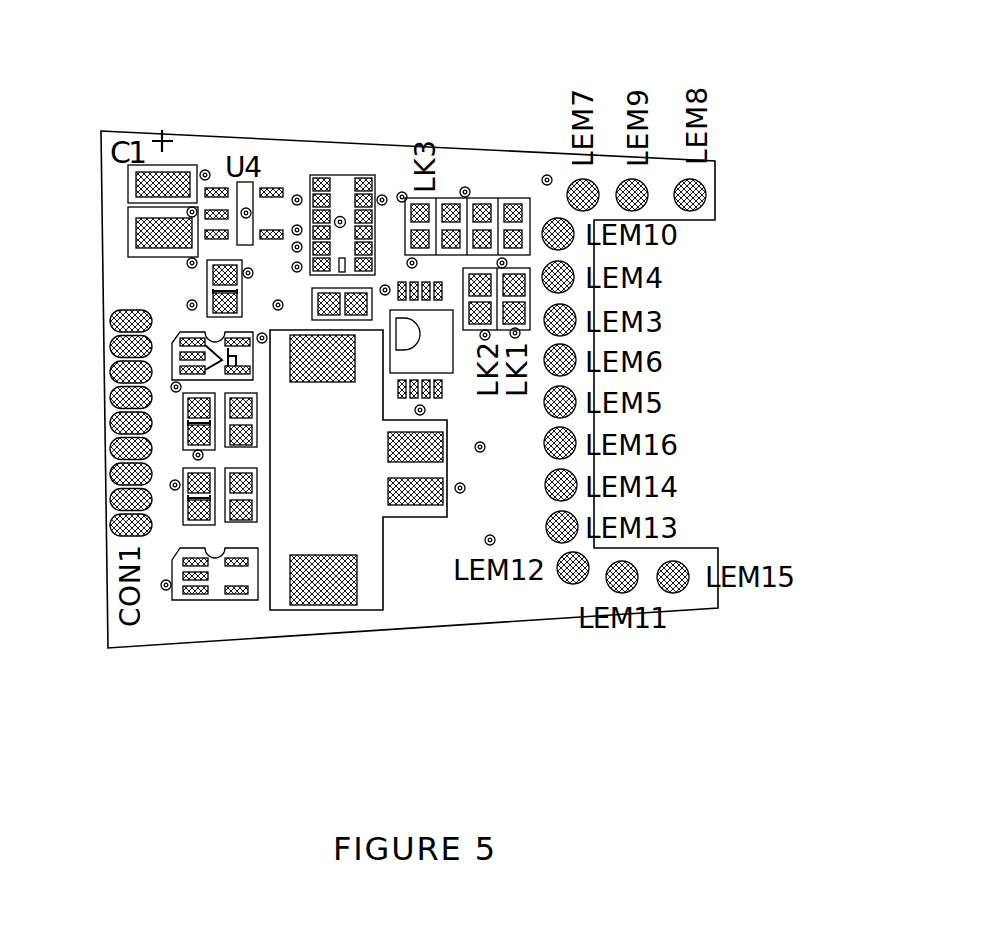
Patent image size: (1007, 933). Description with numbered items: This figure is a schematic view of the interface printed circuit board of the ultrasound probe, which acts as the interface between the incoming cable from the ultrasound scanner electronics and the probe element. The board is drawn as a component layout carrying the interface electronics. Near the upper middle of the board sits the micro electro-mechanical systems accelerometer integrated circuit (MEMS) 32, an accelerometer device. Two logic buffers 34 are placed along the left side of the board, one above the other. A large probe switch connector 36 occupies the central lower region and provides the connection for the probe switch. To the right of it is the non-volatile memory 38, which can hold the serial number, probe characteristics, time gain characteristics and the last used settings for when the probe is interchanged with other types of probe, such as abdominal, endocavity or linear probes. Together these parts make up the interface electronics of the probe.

The micro electro-mechanical systems accelerometer integrated circuit (MEMS) 32 is at (341, 208).
The logic buffers 34 is at (196, 338).
The probe switch connector 36 is at (342, 530).
The non-volatile memory 38 is at (437, 362).